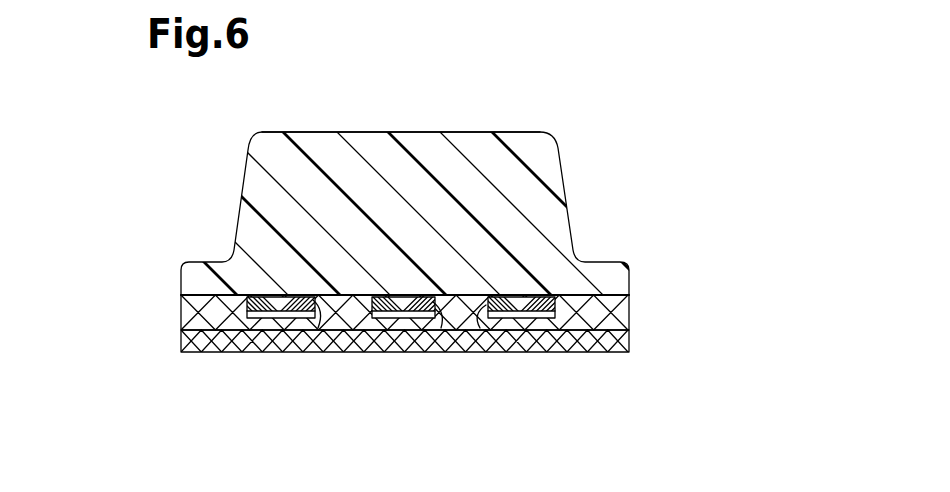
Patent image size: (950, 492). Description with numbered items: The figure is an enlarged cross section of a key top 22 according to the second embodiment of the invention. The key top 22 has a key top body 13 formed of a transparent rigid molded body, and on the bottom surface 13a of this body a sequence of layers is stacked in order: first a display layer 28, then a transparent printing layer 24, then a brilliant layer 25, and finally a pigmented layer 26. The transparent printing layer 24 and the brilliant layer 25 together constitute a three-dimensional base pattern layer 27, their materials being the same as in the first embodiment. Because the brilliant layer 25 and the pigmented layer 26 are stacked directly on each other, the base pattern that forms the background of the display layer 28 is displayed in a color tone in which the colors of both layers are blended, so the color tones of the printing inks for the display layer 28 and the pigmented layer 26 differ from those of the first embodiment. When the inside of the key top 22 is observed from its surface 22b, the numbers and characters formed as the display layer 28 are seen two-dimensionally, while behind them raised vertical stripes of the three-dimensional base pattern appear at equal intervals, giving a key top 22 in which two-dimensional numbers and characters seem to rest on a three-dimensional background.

The key top 22 is at (607, 99).
The surface of the key top 22b is at (357, 132).
The key top body 13 is at (480, 132).
The bottom surface of the key top body 13a is at (605, 310).
The transparent printing layer 24 is at (245, 302).
The brilliant layer 25 is at (181, 312).
The pigmented layer 26 is at (181, 345).
The three-dimensional base pattern layer 27 is at (369, 367).
The display layer 28 is at (296, 332).